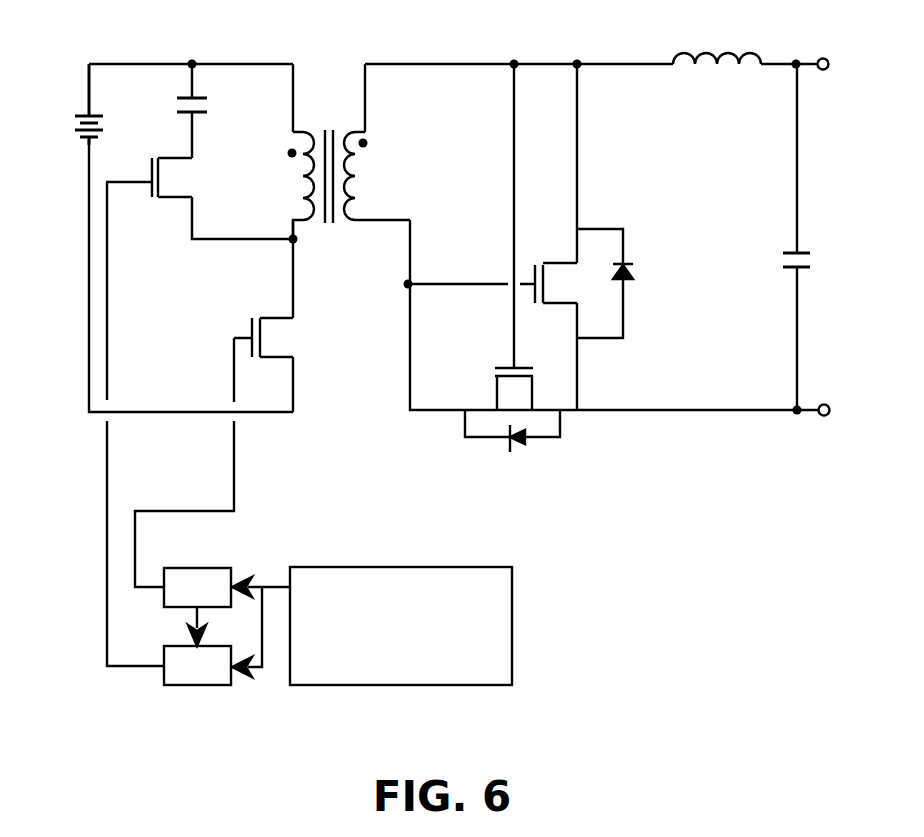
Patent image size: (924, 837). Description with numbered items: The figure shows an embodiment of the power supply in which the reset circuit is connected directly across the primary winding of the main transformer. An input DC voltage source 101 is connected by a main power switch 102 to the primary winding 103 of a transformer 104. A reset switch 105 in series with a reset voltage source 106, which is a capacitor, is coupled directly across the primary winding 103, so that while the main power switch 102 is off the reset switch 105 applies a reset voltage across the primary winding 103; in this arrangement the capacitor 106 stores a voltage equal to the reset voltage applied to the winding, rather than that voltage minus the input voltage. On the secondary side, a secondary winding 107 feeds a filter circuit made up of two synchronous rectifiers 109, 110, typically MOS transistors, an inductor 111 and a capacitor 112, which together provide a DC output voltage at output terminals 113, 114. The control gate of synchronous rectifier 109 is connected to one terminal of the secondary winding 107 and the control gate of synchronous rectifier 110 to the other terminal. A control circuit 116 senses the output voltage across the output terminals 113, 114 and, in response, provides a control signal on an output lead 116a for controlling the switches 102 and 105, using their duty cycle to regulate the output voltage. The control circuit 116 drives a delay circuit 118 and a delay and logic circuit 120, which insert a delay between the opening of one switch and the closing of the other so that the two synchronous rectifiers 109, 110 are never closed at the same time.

The input DC voltage source 101 is at (84, 114).
The main power switch 102 is at (293, 345).
The primary winding 103 is at (297, 190).
The transformer 104 is at (328, 122).
The reset switch 105 is at (193, 177).
The reset voltage source 106 is at (196, 97).
The secondary winding 107 is at (363, 193).
The synchronous rectifier 109 is at (510, 363).
The synchronous rectifier 110 is at (562, 260).
The inductor 111 is at (728, 65).
The capacitor 112 is at (800, 270).
The output terminal 113 is at (805, 62).
The output terminal 114 is at (808, 403).
The control circuit 116 is at (512, 628).
The output lead 116a is at (278, 587).
The delay circuit 118 is at (203, 568).
The delay and logic circuit 120 is at (195, 685).